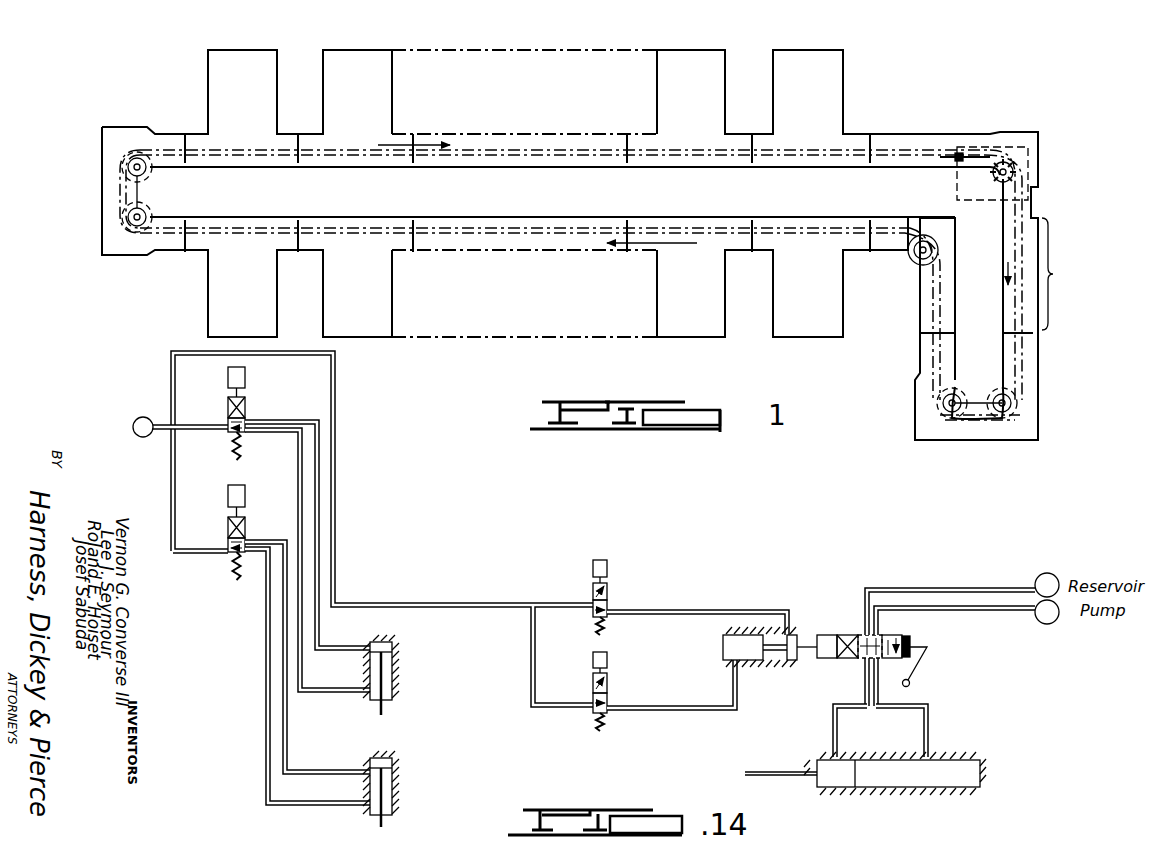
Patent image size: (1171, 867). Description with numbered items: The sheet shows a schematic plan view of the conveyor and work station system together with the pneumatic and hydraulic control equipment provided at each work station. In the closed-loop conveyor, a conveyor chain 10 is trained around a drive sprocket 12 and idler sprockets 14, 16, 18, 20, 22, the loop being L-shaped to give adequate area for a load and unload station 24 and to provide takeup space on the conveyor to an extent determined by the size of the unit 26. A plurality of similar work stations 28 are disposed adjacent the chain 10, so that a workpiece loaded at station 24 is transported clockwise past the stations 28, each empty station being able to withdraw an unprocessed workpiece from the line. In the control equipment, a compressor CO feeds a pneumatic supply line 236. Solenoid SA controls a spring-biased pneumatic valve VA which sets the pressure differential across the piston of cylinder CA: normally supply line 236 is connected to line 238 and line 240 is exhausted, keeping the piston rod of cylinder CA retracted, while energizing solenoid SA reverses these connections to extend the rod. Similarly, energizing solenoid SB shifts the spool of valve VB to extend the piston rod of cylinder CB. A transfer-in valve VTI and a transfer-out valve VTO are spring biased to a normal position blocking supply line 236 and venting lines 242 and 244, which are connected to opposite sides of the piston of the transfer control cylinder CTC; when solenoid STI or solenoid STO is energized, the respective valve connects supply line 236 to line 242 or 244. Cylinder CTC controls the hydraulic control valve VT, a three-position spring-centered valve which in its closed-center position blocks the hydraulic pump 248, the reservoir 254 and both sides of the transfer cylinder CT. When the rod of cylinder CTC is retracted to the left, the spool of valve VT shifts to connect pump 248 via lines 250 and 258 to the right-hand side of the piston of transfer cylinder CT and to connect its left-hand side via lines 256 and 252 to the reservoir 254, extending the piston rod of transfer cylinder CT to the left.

In FIG. 1, the conveyor chain 10 is at (963, 154).
In FIG. 1, the drive sprocket 12 is at (1017, 165).
In FIG. 1, the idler sprocket 14 is at (1012, 405).
In FIG. 1, the idler sprocket 16 is at (945, 405).
In FIG. 1, the idler sprocket 18 is at (914, 263).
In FIG. 1, the idler sprocket 20 is at (127, 219).
In FIG. 1, the idler sprocket 22 is at (128, 175).
In FIG. 1, the load and unload station 24 is at (1063, 274).
In FIG. 1, the unit 26 is at (1025, 372).
In FIG. 1, the work station 28 is at (399, 95).
In FIG. 14, the pneumatic supply line 236 is at (163, 436).
In FIG. 14, the line 238 is at (264, 630).
In FIG. 14, the line 240 is at (288, 729).
In FIG. 14, the line 242 is at (746, 600).
In FIG. 14, the line 244 is at (663, 713).
In FIG. 14, the hydraulic pump 248 is at (1051, 625).
In FIG. 14, the line 250 is at (956, 609).
In FIG. 14, the line 252 is at (896, 588).
In FIG. 14, the reservoir 254 is at (1051, 573).
In FIG. 14, the line 256 is at (838, 731).
In FIG. 14, the line 258 is at (932, 722).
In FIG. 14, the compressor CO is at (132, 430).
In FIG. 14, the solenoid B SB is at (227, 376).
In FIG. 14, the valve VB is at (227, 407).
In FIG. 14, the solenoid A SA is at (227, 495).
In FIG. 14, the pneumatic valve VA is at (227, 528).
In FIG. 14, the cylinder CB is at (398, 676).
In FIG. 14, the cylinder CA is at (398, 797).
In FIG. 14, the transfer-in solenoid STI is at (609, 569).
In FIG. 14, the transfer-in valve VTI is at (592, 598).
In FIG. 14, the transfer-out solenoid STO is at (608, 659).
In FIG. 14, the transfer-out valve VTO is at (610, 697).
In FIG. 14, the transfer control cylinder CTC is at (798, 632).
In FIG. 14, the hydraulic control valve VT is at (852, 660).
In FIG. 14, the transfer cylinder CT is at (957, 756).